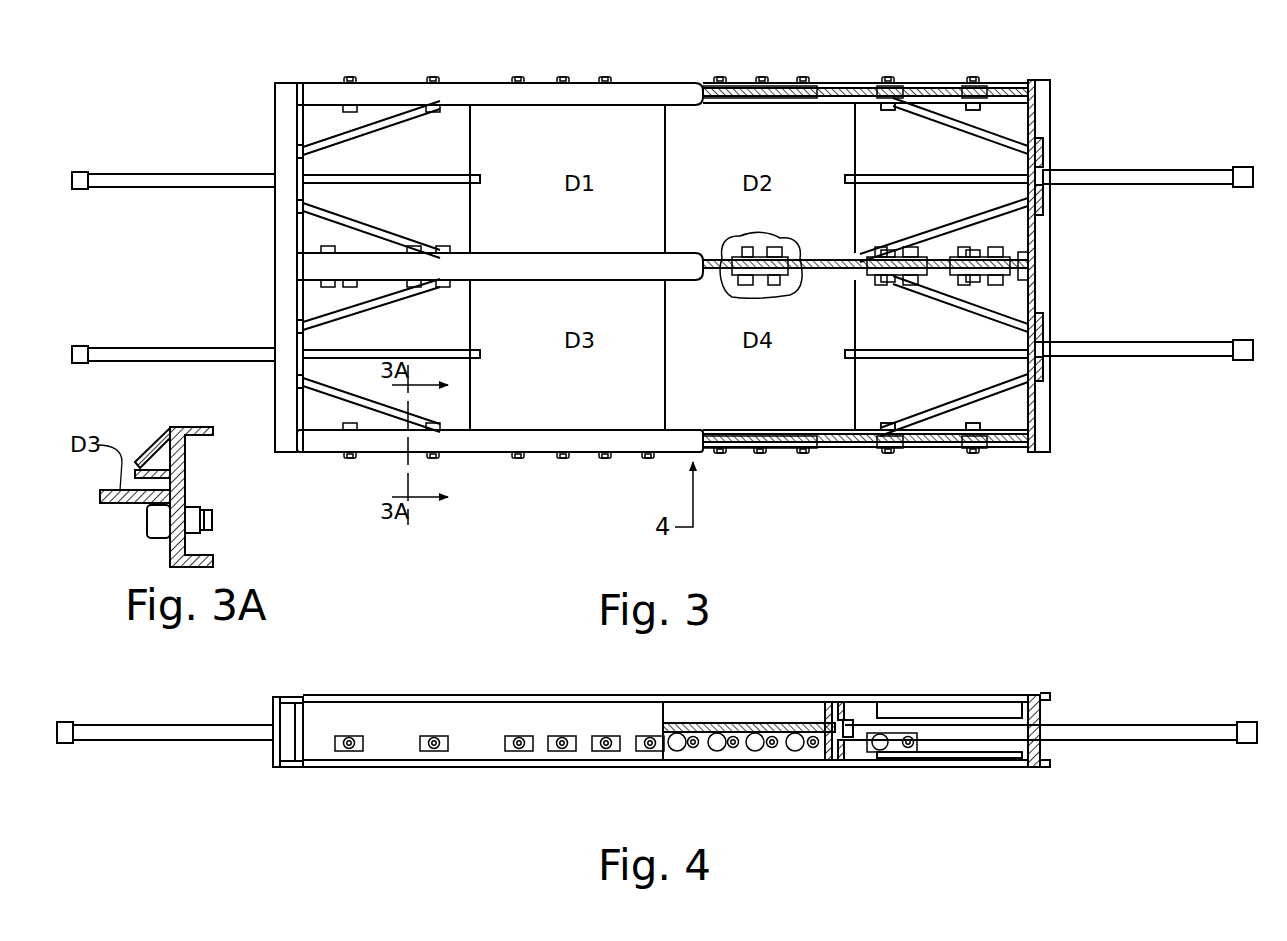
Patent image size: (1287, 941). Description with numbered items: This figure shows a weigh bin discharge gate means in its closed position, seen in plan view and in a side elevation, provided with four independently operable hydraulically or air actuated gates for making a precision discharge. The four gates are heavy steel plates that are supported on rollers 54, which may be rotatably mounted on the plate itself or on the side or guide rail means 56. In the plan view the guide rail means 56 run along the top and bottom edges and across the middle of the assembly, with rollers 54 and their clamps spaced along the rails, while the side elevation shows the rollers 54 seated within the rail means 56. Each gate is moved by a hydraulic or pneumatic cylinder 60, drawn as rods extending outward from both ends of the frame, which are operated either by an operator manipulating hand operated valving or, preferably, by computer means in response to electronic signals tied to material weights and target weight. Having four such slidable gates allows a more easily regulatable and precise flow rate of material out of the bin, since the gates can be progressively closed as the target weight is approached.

In FIG. 3, the rollers 54 is at (350, 108).
In FIG. 3A, the rollers 54 is at (150, 525).
In FIG. 4, the rollers 54 is at (872, 752).
In FIG. 3, the side or guide rail means 56 is at (620, 82).
In FIG. 3A, the side or guide rail means 56 is at (172, 552).
In FIG. 4, the side or guide rail means 56 is at (488, 746).
In FIG. 3, the hydraulic or pneumatic cylinders 60 is at (200, 180).
In FIG. 4, the hydraulic or pneumatic cylinders 60 is at (250, 740).